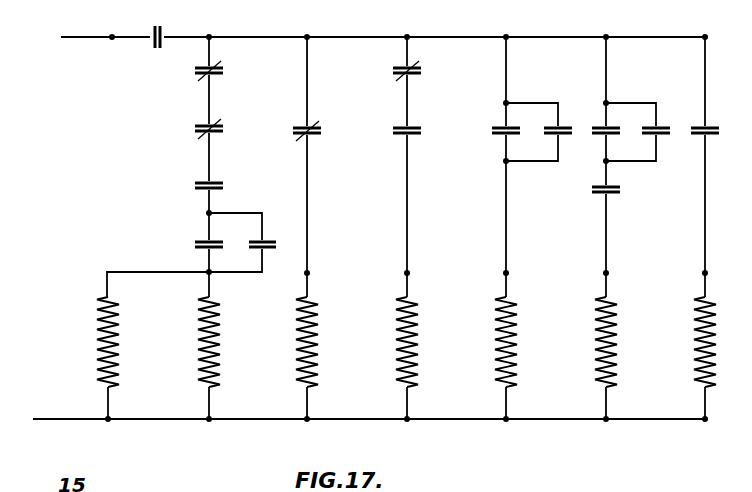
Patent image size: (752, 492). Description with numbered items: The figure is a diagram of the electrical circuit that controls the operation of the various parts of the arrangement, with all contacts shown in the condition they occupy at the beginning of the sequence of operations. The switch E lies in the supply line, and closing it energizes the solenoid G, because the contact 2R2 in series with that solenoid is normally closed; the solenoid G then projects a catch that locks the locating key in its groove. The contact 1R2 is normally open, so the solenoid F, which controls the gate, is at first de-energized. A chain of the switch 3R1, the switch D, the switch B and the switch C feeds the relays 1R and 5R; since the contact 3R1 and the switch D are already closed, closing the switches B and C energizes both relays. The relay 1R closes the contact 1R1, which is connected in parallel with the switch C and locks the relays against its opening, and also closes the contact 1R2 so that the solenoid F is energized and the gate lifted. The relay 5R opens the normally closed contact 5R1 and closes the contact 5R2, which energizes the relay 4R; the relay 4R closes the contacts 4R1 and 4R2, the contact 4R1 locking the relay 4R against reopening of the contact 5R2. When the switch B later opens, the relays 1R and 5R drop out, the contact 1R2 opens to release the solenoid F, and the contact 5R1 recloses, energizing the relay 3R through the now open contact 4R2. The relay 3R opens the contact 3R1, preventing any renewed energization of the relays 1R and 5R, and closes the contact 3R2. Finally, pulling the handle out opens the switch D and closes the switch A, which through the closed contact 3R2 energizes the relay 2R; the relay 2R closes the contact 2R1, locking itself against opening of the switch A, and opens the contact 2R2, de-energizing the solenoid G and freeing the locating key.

The switch E is at (161, 30).
The contact 3R1 is at (230, 71).
The switch D is at (220, 129).
The switch B is at (219, 187).
The switch C is at (217, 246).
The contact 1R1 is at (275, 257).
The contact 2R2 is at (326, 131).
The contact 5R1 is at (428, 71).
The contact 4R2 is at (428, 134).
The contact 5R2 is at (500, 141).
The contact 4R1 is at (566, 126).
The switch A is at (607, 120).
The contact 2R1 is at (662, 126).
The contact 1R2 is at (703, 141).
The contact 3R2 is at (627, 192).
The relay 5R is at (124, 342).
The relay 1R is at (225, 342).
The solenoid G is at (316, 342).
The relay 3R is at (422, 342).
The relay 4R is at (522, 342).
The relay 2R is at (621, 342).
The solenoid F is at (694, 368).